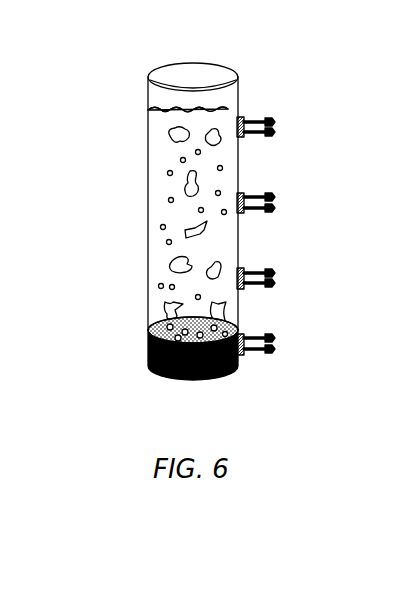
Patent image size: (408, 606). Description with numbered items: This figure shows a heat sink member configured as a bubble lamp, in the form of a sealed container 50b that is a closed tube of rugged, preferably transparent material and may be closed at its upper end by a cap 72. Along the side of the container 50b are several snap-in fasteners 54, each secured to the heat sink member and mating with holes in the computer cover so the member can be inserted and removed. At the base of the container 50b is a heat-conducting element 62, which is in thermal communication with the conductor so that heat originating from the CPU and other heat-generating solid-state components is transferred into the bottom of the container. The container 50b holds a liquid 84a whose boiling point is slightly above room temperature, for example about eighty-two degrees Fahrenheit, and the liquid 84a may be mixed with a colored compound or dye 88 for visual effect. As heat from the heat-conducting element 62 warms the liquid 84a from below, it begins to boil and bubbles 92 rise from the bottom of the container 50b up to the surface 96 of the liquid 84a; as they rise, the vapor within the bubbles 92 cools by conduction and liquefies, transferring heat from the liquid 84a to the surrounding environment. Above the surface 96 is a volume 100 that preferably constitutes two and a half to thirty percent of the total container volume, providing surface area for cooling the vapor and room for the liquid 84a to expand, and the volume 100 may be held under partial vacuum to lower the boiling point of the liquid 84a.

The sealed container 50b is at (148, 153).
The snap-in fastener 54 is at (282, 275).
The heat-conducting element 62 is at (150, 348).
The cap 72 is at (192, 72).
The liquid 84a is at (157, 193).
The colored compound or dye 88 is at (165, 313).
The bubbles 92 is at (166, 242).
The surface 96 is at (210, 110).
The volume 100 is at (160, 93).